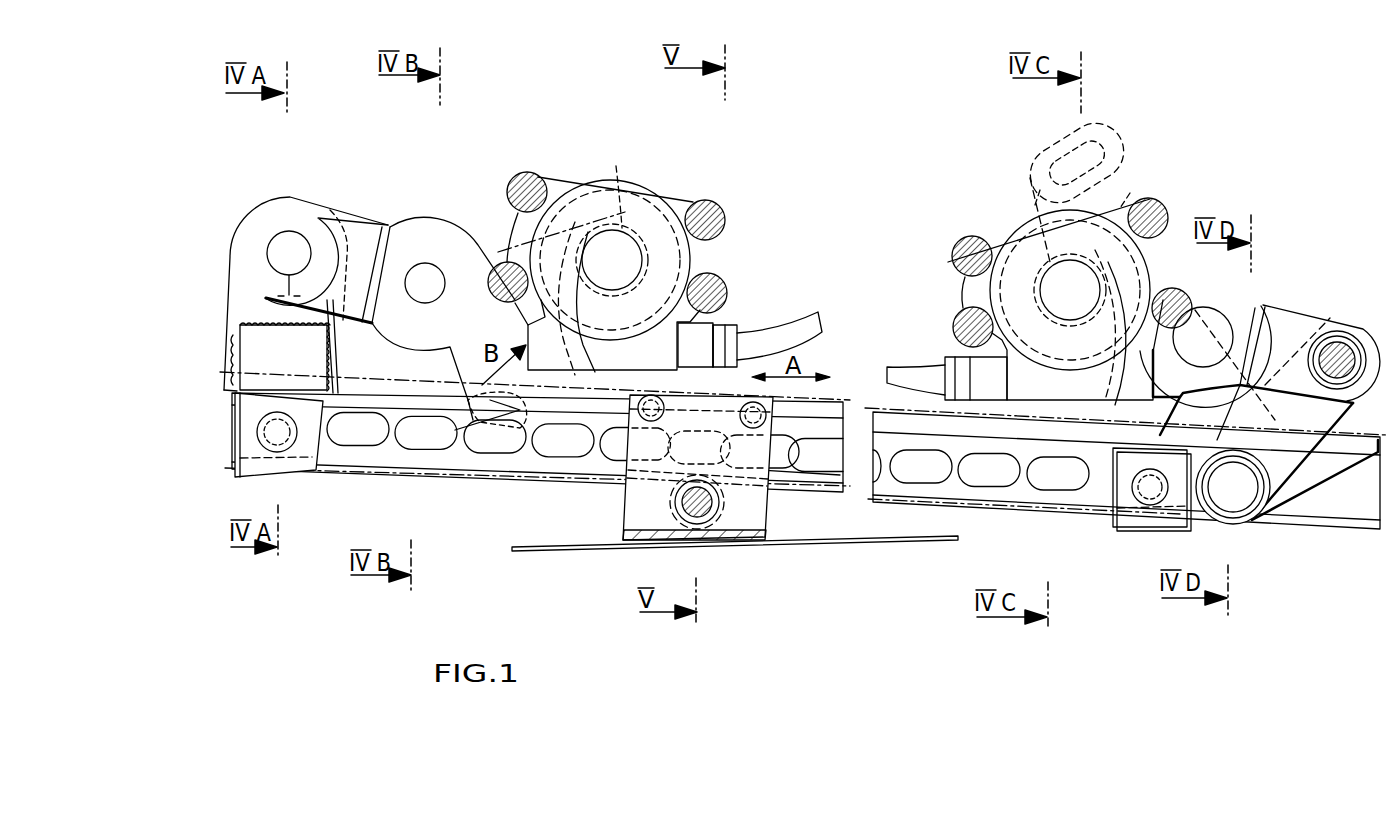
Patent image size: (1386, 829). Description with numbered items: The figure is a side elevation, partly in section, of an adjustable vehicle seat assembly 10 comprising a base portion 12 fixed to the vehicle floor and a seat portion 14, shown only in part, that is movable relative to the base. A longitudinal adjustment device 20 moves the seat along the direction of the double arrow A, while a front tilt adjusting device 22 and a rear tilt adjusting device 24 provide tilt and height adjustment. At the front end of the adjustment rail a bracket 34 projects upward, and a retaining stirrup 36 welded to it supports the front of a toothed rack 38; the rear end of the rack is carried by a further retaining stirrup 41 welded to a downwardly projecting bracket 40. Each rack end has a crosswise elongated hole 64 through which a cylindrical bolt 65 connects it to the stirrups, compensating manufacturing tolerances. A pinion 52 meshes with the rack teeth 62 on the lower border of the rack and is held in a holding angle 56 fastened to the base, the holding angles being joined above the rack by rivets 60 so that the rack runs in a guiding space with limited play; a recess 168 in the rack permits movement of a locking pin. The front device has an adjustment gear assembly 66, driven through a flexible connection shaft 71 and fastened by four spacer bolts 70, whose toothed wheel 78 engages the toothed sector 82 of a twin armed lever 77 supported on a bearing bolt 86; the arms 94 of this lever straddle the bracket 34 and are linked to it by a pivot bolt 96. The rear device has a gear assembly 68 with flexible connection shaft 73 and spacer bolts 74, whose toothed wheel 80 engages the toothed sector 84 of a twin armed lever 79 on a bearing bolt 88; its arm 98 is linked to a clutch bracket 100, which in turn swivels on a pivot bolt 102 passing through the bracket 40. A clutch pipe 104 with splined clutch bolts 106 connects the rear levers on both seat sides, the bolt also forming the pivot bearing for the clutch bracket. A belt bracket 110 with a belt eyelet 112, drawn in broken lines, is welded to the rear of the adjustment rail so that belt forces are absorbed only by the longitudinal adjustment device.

The seat assembly 10 is at (833, 125).
The base portion 12 is at (548, 552).
The seat portion 14 is at (1352, 460).
The longitudinal adjustment device 20 is at (515, 488).
The front tilt adjusting device 22 is at (424, 200).
The rear tilt adjusting device 24 is at (1182, 195).
The bracket 34 is at (225, 300).
The retaining stirrup 36 is at (322, 482).
The toothed rack 38 is at (1060, 510).
The bracket 40 is at (1290, 500).
The retaining stirrup 41 is at (1112, 522).
The pinion 52 is at (730, 520).
The holding angle 56 is at (620, 508).
The rivets 60 is at (668, 405).
The rack teeth 62 is at (808, 484).
The elongated hole 64 is at (290, 450).
The cylindrical bolt 65 is at (258, 430).
The adjustment gear assembly 66 is at (645, 200).
The adjustment gear assembly 68 is at (990, 228).
The spacer bolts 70 is at (535, 180).
The flexible connection shaft 71 is at (800, 320).
The flexible connection shaft 73 is at (895, 355).
The spacer bolts 74 is at (950, 310).
The twin armed lever 77 is at (452, 235).
The toothed wheel 78 is at (589, 257).
The twin armed lever 79 is at (1262, 300).
The toothed wheel 80 is at (1040, 222).
The toothed sector 82 is at (465, 432).
The toothed sector 84 is at (1112, 430).
The bearing bolt 86 is at (410, 277).
The bearing bolt 88 is at (1205, 306).
The arms 94 is at (277, 218).
The pivot bolt 96 is at (290, 240).
The arm 98 is at (1290, 325).
The clutch bracket 100 is at (1290, 480).
The pivot bolt 102 is at (1243, 522).
The clutch pipe 104 is at (1340, 330).
The splined clutch bolt 106 is at (1345, 392).
The belt bracket 110 is at (1110, 150).
The belt eyelet 112 is at (1088, 140).
The recess 168 is at (995, 480).